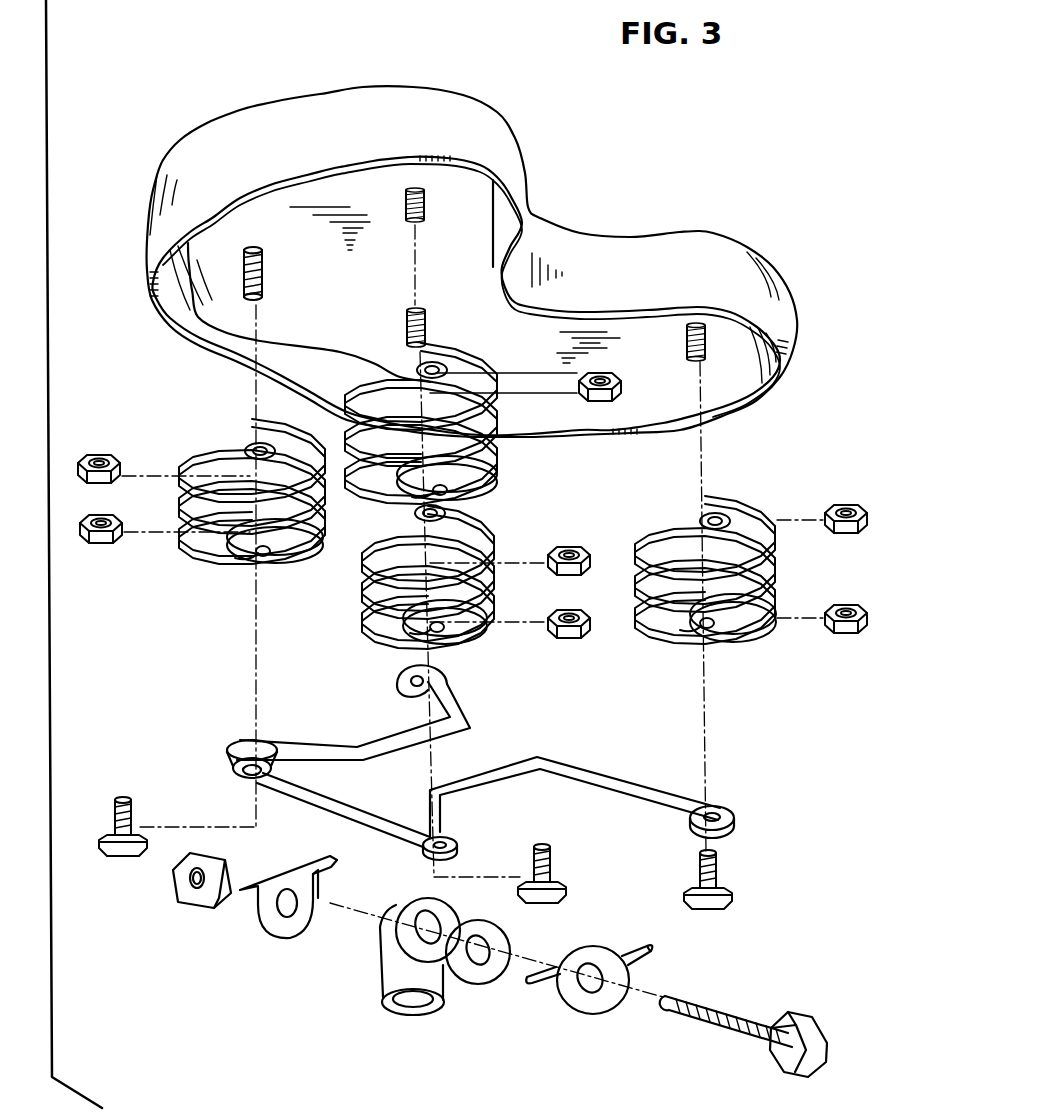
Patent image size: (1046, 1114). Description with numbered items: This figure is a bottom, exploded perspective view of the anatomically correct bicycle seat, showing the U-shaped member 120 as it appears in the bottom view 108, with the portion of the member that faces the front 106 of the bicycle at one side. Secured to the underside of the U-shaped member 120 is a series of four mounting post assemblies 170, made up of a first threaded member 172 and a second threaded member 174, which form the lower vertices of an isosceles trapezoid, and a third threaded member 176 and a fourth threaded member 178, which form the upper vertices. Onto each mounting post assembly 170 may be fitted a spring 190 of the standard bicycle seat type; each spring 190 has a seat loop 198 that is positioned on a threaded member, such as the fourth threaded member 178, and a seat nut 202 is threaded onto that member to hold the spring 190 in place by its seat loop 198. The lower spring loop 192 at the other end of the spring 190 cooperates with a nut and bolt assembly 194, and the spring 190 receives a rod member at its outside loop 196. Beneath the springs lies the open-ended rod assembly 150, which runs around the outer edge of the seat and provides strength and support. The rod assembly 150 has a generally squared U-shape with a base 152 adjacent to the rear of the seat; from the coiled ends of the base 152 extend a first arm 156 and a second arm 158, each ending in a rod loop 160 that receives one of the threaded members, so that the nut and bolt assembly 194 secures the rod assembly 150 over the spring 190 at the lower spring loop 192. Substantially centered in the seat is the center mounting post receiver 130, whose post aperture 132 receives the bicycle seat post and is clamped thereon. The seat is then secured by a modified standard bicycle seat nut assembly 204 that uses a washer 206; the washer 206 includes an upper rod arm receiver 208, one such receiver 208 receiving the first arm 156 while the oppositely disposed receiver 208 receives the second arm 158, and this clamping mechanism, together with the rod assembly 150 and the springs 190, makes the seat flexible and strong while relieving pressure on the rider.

The front 106 is at (789, 283).
The bottom view 108 is at (774, 405).
The U-shaped member 120 is at (388, 96).
The center mounting post receiver 130 is at (375, 981).
The post aperture 132 is at (405, 1004).
The open-ended rod assembly 150 is at (476, 763).
The base 152 is at (348, 810).
The first arm 156 is at (384, 740).
The second arm 158 is at (548, 743).
The rod loop 160 is at (230, 774).
The mounting post assembly 170 is at (228, 294).
The first threaded member 172 is at (262, 277).
The second threaded member 174 is at (407, 322).
The third threaded member 176 is at (424, 206).
The fourth threaded member 178 is at (687, 340).
The spring 190 is at (347, 392).
The lower spring loop 192 is at (258, 556).
The nut and bolt assembly 194 is at (102, 550).
The outside loop 196 is at (418, 704).
The seat loop 198 is at (433, 368).
The seat nut 202 is at (117, 457).
The bicycle seat nut assembly 204 is at (183, 888).
The washer 206 is at (280, 926).
The upper rod arm receiver 208 is at (262, 874).